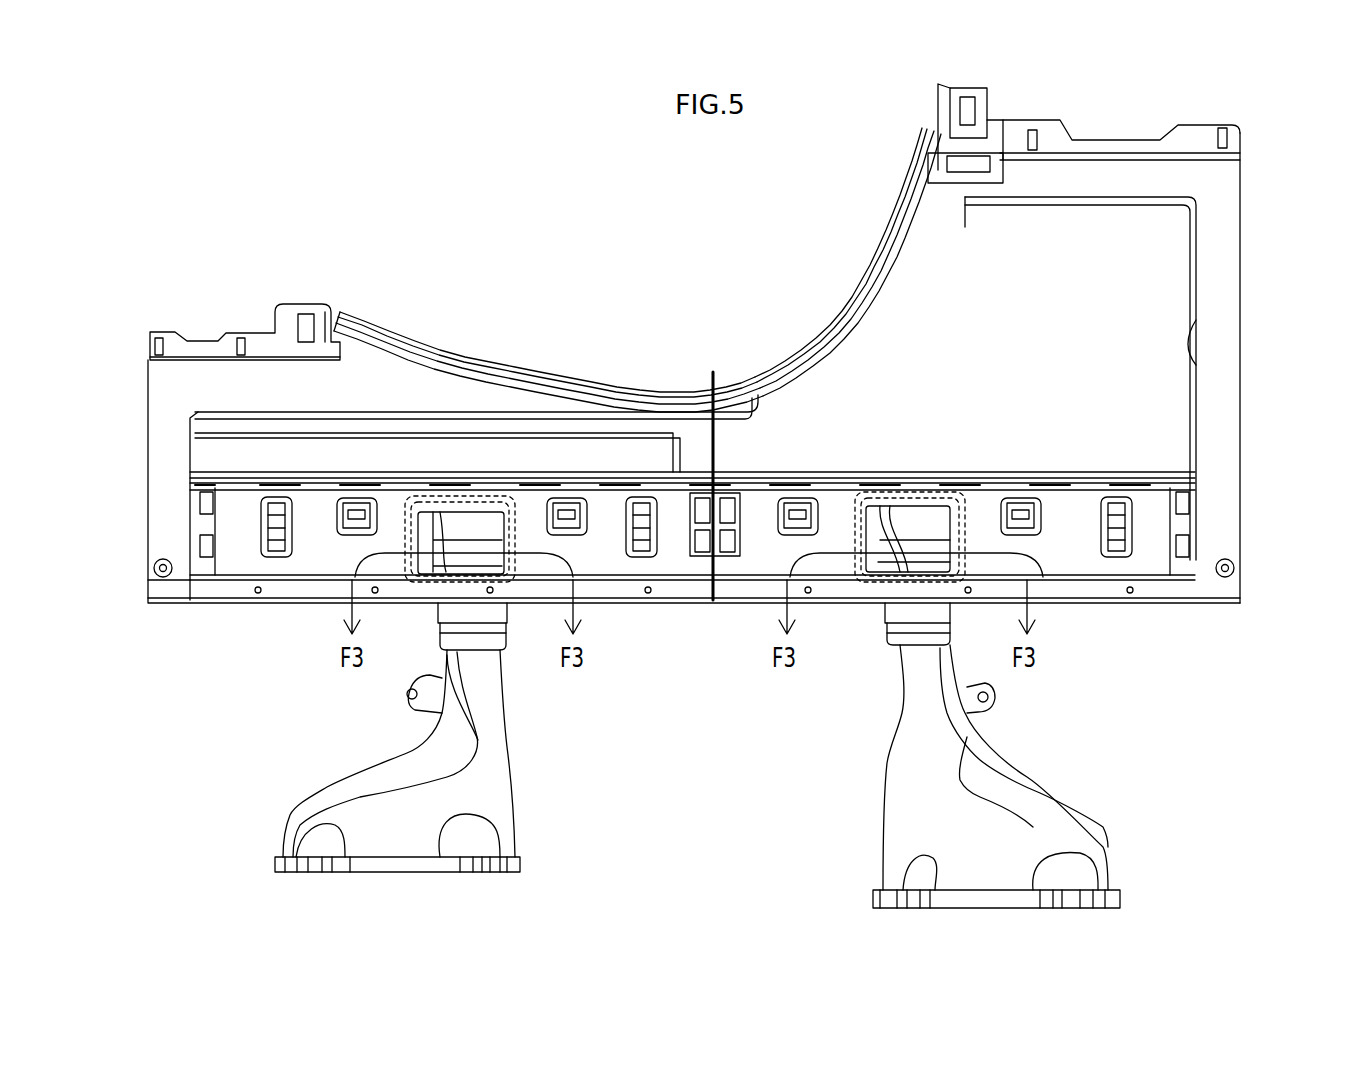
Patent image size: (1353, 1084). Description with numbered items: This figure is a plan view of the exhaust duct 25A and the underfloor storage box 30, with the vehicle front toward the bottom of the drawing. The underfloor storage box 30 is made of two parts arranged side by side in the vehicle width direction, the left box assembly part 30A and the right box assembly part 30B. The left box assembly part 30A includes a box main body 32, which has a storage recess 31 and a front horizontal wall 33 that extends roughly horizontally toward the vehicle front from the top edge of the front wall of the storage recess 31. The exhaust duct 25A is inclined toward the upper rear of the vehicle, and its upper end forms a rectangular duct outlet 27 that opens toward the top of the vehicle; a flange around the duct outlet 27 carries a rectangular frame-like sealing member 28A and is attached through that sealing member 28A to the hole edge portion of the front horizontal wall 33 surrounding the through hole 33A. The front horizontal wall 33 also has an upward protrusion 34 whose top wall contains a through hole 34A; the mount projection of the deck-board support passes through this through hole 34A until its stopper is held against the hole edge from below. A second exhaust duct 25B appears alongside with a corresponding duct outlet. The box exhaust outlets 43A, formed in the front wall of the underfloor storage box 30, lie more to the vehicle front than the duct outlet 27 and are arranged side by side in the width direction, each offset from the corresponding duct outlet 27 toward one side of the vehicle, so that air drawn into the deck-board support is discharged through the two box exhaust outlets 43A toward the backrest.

The underfloor storage box 30 is at (149, 285).
The left box assembly part 30A is at (803, 288).
The right box assembly part 30B is at (578, 326).
The storage recess 31 is at (1196, 332).
The box main body 32 is at (1152, 250).
The front horizontal wall 33 is at (1152, 565).
The through hole 33A is at (503, 540).
The sealing member 28A is at (418, 492).
The duct outlet 27 is at (912, 548).
The protrusion 34 is at (357, 497).
The through hole 34A is at (1014, 532).
The box exhaust outlet 43A is at (288, 592).
The exhaust duct 25A is at (942, 768).
The left support leg 25B is at (490, 808).